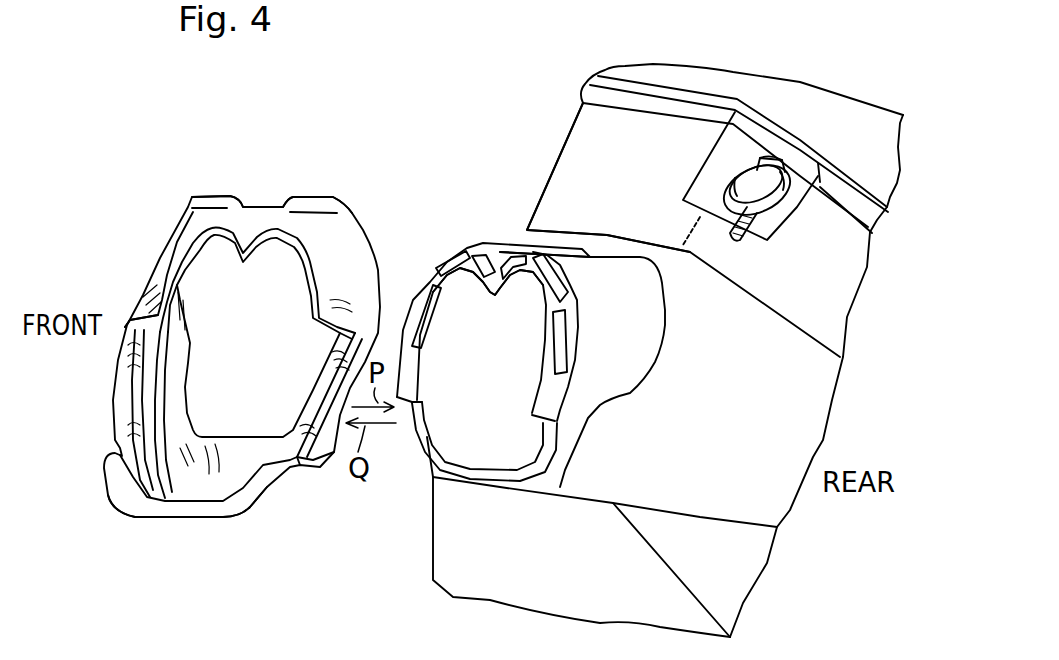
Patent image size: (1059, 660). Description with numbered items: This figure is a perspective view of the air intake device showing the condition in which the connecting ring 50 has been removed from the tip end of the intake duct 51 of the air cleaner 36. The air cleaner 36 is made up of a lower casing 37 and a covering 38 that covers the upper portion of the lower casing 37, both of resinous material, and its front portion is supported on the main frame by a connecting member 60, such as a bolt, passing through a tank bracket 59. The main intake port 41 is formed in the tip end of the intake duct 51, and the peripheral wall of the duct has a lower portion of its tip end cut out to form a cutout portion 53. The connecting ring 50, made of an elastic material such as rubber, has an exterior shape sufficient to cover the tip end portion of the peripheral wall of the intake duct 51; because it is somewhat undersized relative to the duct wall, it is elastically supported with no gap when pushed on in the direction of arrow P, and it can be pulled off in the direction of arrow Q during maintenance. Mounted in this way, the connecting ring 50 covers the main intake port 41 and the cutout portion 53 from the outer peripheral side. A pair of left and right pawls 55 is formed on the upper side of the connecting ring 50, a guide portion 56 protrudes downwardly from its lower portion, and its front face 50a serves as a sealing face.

The air cleaner 36 is at (498, 14).
The lower casing 37 is at (620, 148).
The covering 38 is at (653, 73).
The main intake port 41 is at (475, 348).
The connecting ring 50 is at (133, 194).
The front face 50a is at (170, 256).
The intake duct 51 is at (496, 250).
The cutout portion 53 is at (428, 445).
The pawls 55 is at (208, 203).
The guide portion 56 is at (170, 507).
The tank bracket 59 is at (710, 175).
The connecting member 60 is at (773, 157).